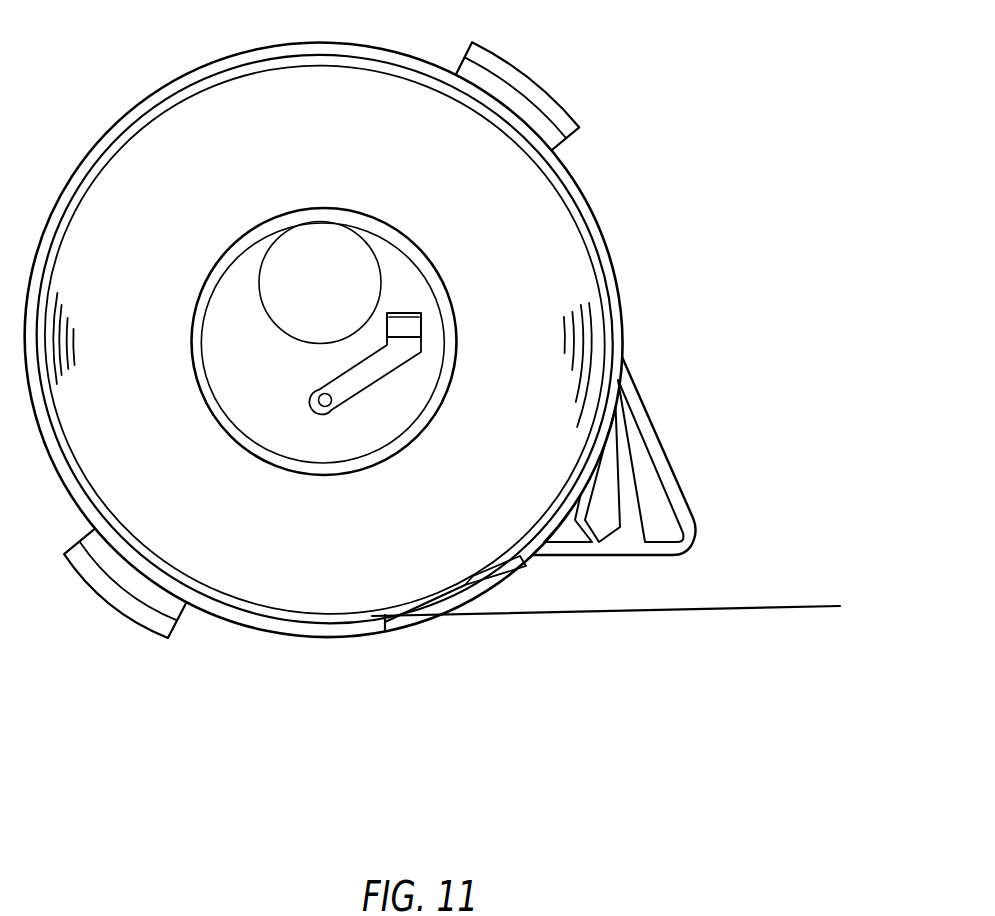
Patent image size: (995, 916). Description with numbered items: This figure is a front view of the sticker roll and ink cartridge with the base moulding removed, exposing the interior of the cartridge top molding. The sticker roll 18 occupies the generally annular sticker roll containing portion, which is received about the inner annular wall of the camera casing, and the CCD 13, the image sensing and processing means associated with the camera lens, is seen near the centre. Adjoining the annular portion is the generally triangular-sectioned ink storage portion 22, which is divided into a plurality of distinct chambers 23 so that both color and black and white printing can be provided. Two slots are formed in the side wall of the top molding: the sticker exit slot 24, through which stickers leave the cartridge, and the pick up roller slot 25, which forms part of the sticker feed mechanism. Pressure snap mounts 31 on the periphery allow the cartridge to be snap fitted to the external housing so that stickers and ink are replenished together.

The CCD 13 is at (421, 314).
The sticker roll 18 is at (550, 210).
The ink storage portion 22 is at (653, 420).
The chambers 23 is at (655, 510).
The sticker exit slot 24 is at (403, 628).
The pick up roller slot 25 is at (493, 575).
The pressure snap mounts 31 is at (513, 78).